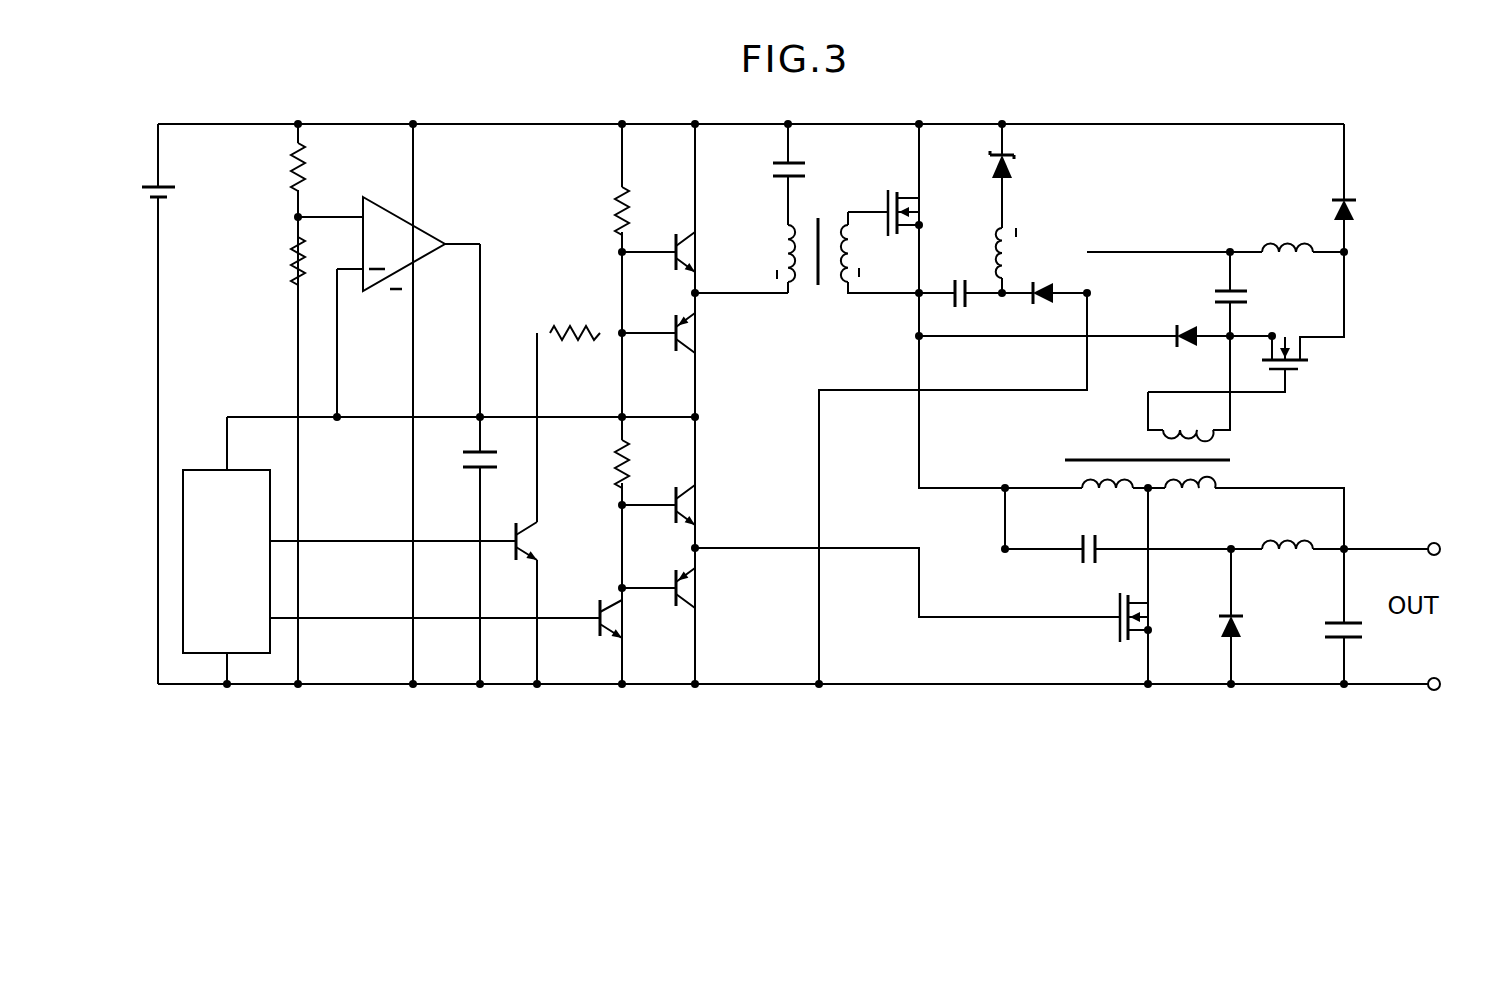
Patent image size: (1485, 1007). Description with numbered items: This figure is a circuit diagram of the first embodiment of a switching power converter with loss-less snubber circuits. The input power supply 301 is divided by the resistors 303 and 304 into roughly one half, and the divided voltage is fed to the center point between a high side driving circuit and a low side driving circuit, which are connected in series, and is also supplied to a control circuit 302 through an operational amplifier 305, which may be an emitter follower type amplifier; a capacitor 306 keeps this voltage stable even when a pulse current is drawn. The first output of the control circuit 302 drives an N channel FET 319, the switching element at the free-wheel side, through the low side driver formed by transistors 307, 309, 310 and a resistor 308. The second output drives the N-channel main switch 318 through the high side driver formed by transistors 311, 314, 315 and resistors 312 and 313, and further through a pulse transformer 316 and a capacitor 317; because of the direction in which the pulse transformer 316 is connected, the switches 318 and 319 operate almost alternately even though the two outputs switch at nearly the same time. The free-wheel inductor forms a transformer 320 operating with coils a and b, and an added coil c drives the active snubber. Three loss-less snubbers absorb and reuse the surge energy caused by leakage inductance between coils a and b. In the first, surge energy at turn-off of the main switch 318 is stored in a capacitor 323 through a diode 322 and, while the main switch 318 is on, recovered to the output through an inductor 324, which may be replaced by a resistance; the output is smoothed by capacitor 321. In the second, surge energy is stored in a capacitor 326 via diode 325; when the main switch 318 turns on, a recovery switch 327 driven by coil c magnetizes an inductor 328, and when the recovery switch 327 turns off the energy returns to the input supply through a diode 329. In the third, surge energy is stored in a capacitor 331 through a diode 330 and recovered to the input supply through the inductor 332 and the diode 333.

The input power supply 301 is at (168, 193).
The control circuit 302 is at (206, 468).
The resistor 303 is at (294, 172).
The resistor 304 is at (292, 264).
The operational amplifier 305 is at (418, 228).
The capacitor 306 is at (467, 474).
The transistor 307 is at (624, 626).
The resistor 308 is at (616, 466).
The transistor 309 is at (700, 591).
The transistor 310 is at (700, 503).
The transistor 311 is at (536, 545).
The resistor 312 is at (566, 327).
The resistor 313 is at (618, 216).
The transistor 314 is at (697, 343).
The transistor 315 is at (699, 258).
The pulse transformer 316 is at (818, 288).
The capacitor 317 is at (774, 170).
The main switch 318 is at (892, 190).
The N channel FET 319 is at (1114, 636).
The transformer 320 is at (1129, 453).
The output capacitor 321 is at (1364, 632).
The diode 322 is at (1223, 618).
The capacitor 323 is at (1085, 563).
The inductor 324 is at (1293, 542).
The diode 325 is at (1190, 330).
The capacitor 326 is at (1248, 297).
The recovery switch 327 is at (1295, 377).
The inductor 328 is at (1284, 242).
The diode 329 is at (1352, 214).
The diode 330 is at (1044, 306).
The capacitor 331 is at (961, 282).
The inductor 332 is at (1012, 258).
The diode 333 is at (1010, 166).